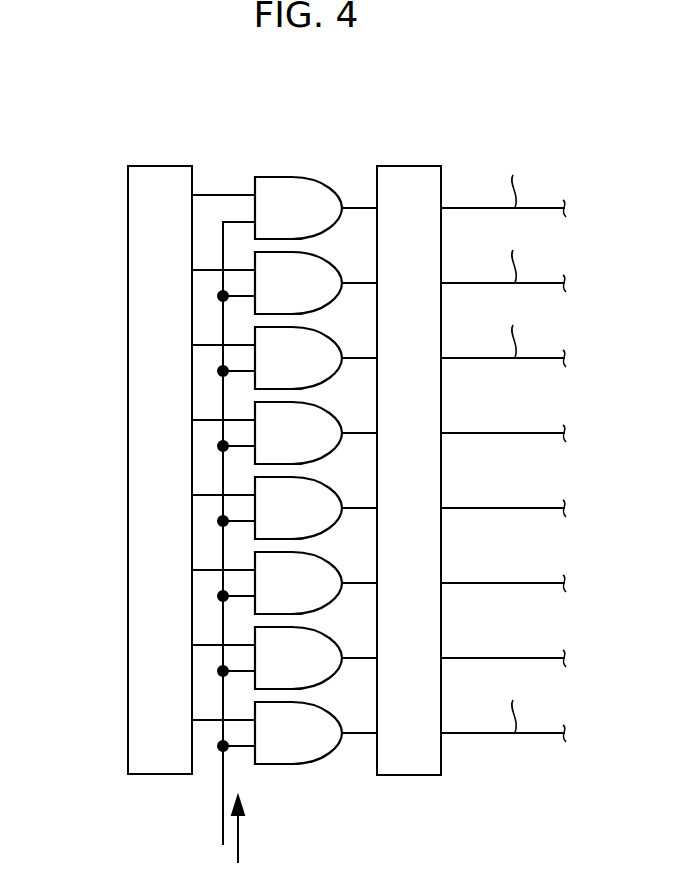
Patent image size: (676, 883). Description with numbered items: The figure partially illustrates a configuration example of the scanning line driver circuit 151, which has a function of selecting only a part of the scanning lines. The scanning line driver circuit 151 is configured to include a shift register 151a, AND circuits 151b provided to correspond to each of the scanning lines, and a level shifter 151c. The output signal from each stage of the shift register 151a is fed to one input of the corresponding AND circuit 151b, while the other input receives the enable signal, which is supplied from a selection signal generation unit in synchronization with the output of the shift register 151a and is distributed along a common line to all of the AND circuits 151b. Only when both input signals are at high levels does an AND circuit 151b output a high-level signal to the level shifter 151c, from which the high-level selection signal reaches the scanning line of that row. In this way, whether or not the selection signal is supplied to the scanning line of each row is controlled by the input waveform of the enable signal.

The scanning line driver circuit 151 is at (123, 131).
The shift register 151a is at (158, 774).
The AND circuits 151b is at (255, 203).
The level shifter 151c is at (408, 775).